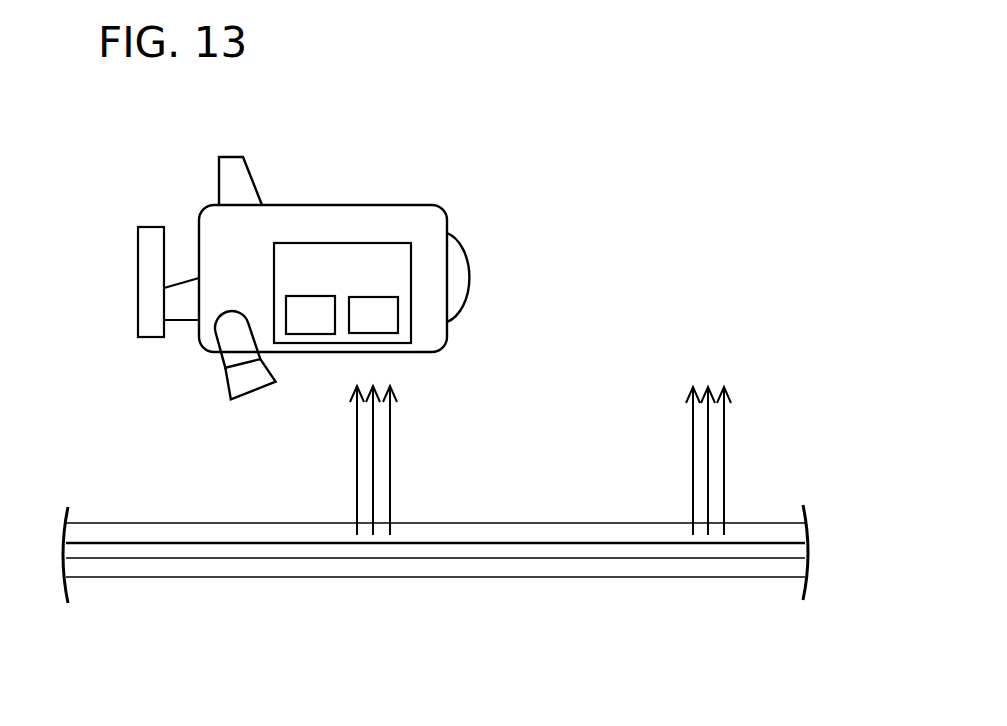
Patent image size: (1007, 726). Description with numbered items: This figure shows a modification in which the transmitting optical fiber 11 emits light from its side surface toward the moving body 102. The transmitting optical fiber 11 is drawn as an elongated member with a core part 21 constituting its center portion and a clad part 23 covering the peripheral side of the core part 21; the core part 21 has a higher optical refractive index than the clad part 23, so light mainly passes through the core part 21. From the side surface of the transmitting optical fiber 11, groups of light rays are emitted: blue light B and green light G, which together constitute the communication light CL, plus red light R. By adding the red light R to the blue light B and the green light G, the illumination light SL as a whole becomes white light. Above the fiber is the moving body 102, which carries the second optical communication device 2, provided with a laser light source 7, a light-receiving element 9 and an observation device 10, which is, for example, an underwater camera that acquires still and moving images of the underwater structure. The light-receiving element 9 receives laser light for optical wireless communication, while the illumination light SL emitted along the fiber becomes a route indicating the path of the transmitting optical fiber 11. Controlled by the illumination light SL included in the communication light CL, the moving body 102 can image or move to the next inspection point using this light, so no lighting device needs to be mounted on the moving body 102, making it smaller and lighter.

The moving body 102 is at (153, 206).
The second optical communication device 2 is at (295, 243).
The laser light source 7 is at (315, 300).
The light-receiving element 9 is at (373, 305).
The observation device 10 is at (228, 353).
The transmitting optical fiber 11 is at (553, 587).
The core part 21 is at (272, 553).
The clad part 23 is at (197, 530).
The blue light B is at (390, 428).
The green light G is at (373, 450).
The red light R is at (357, 475).
The communication light CL is at (450, 412).
The illumination light SL is at (493, 423).